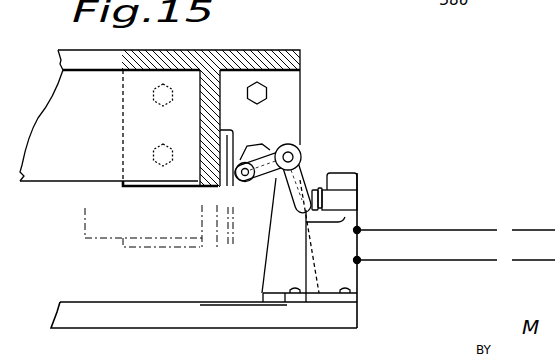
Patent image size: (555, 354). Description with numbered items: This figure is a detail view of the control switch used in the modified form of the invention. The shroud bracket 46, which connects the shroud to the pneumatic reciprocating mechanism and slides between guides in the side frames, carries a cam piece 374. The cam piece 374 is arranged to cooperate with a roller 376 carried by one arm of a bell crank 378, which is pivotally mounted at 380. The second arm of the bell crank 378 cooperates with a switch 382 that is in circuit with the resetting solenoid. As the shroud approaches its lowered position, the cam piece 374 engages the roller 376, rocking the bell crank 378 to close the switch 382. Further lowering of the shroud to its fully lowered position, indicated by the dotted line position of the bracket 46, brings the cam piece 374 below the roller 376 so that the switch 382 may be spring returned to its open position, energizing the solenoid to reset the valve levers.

The bracket 46 is at (270, 51).
The cam piece 374 is at (229, 136).
The roller 376 is at (240, 188).
The bell crank 378 is at (301, 155).
The pivot 380 is at (292, 146).
The switch 382 is at (373, 187).